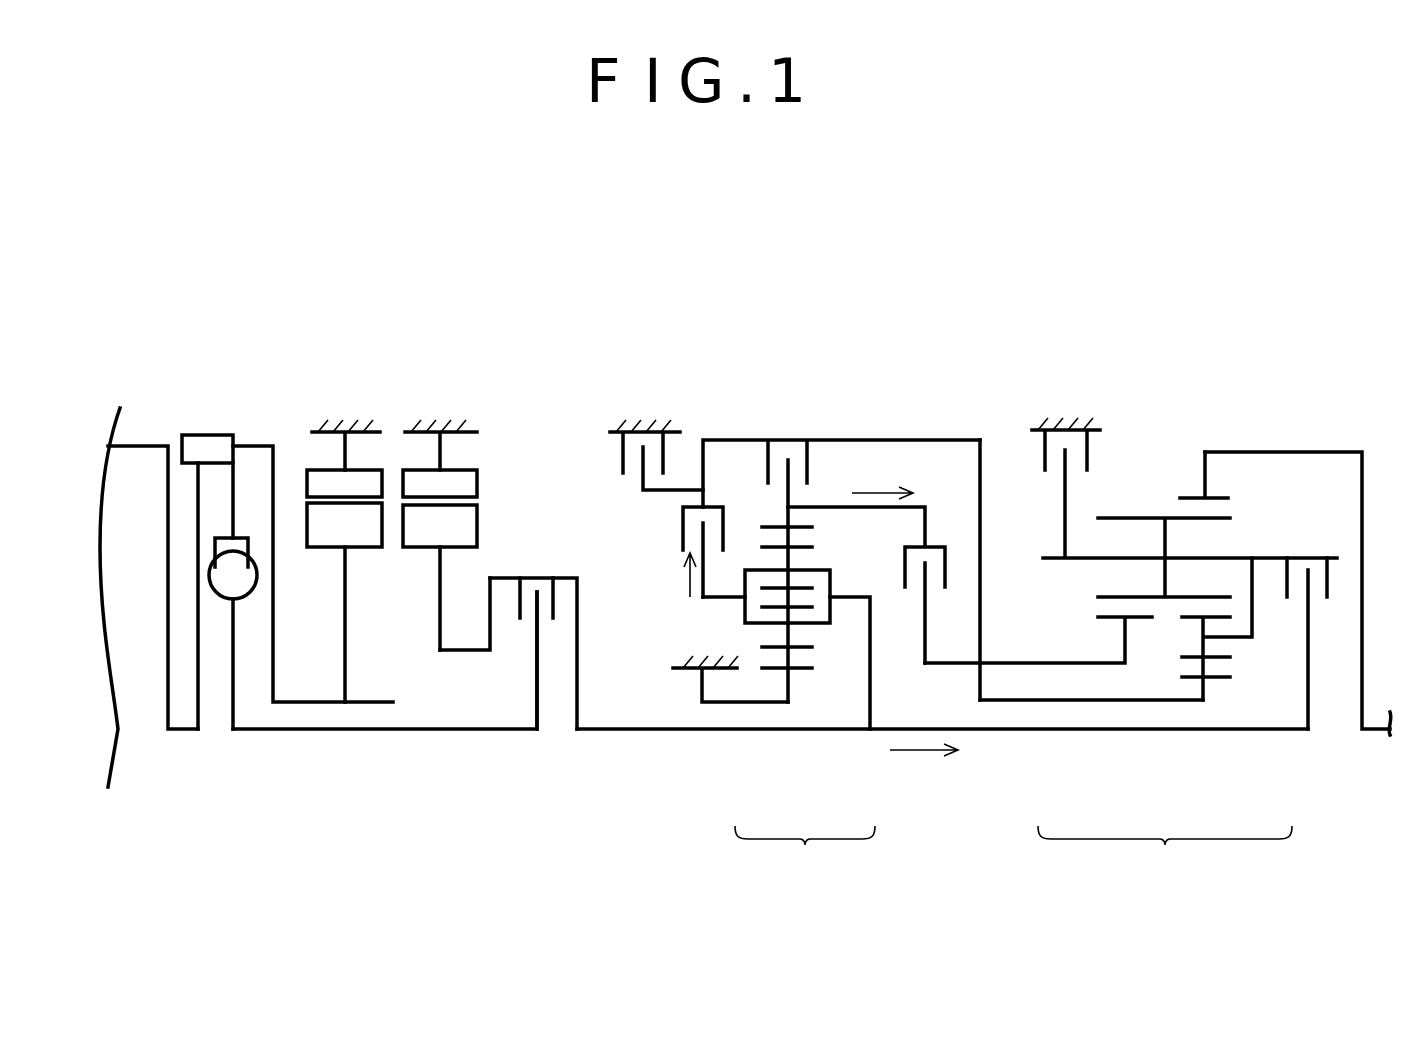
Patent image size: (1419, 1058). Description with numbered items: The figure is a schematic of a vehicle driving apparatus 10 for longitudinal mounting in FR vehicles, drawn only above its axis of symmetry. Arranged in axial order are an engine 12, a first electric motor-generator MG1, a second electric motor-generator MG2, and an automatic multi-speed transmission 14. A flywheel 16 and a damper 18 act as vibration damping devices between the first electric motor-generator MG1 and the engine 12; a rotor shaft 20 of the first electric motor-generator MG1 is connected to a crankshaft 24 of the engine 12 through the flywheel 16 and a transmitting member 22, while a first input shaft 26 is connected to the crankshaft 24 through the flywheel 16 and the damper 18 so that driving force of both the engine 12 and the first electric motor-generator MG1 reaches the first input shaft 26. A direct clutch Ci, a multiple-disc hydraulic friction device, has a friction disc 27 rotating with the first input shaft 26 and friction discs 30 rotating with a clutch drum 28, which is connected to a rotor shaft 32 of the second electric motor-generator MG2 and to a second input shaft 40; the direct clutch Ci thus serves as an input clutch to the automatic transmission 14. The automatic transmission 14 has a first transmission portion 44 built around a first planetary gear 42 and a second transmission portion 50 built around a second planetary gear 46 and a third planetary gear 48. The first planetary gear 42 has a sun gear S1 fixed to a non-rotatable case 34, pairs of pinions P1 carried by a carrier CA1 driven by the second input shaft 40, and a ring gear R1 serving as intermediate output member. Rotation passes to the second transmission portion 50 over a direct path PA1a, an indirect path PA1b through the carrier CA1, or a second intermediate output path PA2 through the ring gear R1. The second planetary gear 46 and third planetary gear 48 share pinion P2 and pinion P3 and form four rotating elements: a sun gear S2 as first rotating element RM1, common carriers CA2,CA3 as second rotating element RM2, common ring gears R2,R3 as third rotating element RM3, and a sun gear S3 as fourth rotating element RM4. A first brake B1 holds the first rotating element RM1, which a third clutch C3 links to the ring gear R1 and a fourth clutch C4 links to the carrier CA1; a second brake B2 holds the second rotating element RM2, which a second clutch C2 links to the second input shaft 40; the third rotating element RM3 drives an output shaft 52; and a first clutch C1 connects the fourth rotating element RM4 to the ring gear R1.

The vehicle driving apparatus 10 is at (792, 243).
The engine 12 is at (142, 720).
The automatic multi-speed transmission 14 is at (1027, 333).
The flywheel 16 is at (197, 437).
The damper 18 is at (250, 607).
The rotor shaft 20 is at (372, 700).
The transmitting member 22 is at (258, 446).
The crankshaft 24 is at (188, 730).
The first input shaft 26 is at (382, 730).
The friction disc 27 is at (530, 627).
The clutch drum 28 is at (560, 578).
The friction discs 30 is at (497, 577).
The rotor shaft 32 is at (475, 653).
The case 34 is at (443, 430).
The second input shaft 40 is at (635, 731).
The first planetary gear 42 is at (800, 690).
The first transmission portion 44 is at (805, 853).
The second planetary gear 46 is at (1120, 708).
The third planetary gear 48 is at (1208, 708).
The second transmission portion 50 is at (1165, 853).
The output shaft 52 is at (1375, 731).
The first electric motor-generator MG1 is at (344, 561).
The second electric motor-generator MG2 is at (440, 535).
The direct clutch Ci is at (535, 557).
The first brake B1 is at (651, 470).
The second brake B2 is at (1087, 457).
The first clutch C1 is at (947, 572).
The second clutch C2 is at (1327, 590).
The third clutch C3 is at (807, 463).
The fourth clutch C4 is at (682, 532).
The ring gear R1 is at (777, 525).
The pinions P1 is at (802, 543).
The sun gear S1 is at (797, 670).
The carrier CA1 is at (745, 610).
The pinion P2 is at (1118, 593).
The sun gear S2 is at (1117, 620).
The pinion P3 is at (1217, 652).
The sun gear S3 is at (1217, 677).
The ring gears R2,R3 is at (1218, 497).
The carriers CA2,CA3 is at (1223, 557).
The first rotating element RM1 is at (937, 433).
The second rotating element RM2 is at (1057, 545).
The third rotating element RM3 is at (1235, 447).
The fourth rotating element RM4 is at (1105, 698).
The direct path PA1a is at (927, 771).
The indirect path PA1b is at (687, 580).
The second intermediate output path PA2 is at (885, 490).